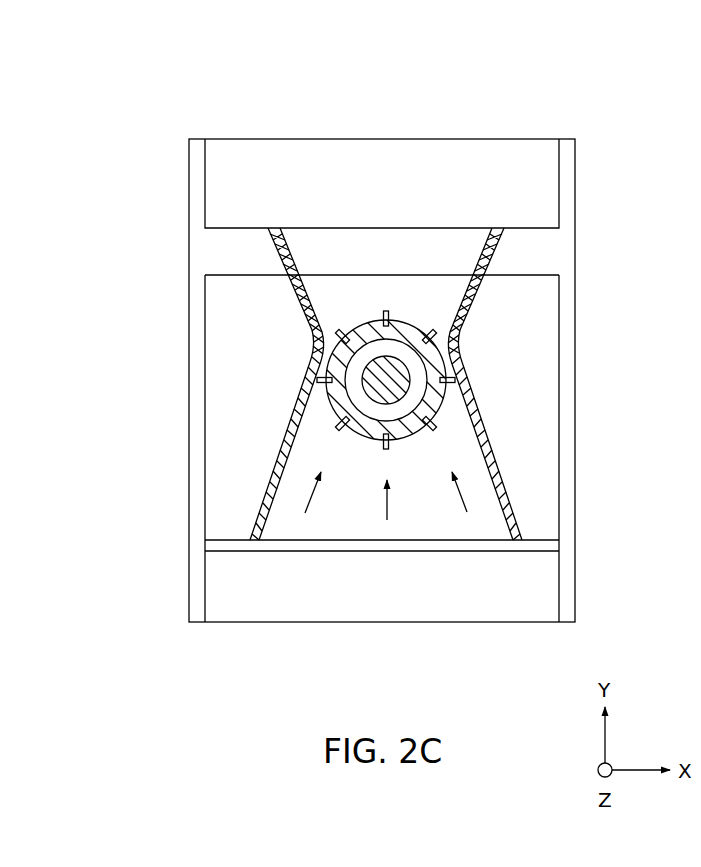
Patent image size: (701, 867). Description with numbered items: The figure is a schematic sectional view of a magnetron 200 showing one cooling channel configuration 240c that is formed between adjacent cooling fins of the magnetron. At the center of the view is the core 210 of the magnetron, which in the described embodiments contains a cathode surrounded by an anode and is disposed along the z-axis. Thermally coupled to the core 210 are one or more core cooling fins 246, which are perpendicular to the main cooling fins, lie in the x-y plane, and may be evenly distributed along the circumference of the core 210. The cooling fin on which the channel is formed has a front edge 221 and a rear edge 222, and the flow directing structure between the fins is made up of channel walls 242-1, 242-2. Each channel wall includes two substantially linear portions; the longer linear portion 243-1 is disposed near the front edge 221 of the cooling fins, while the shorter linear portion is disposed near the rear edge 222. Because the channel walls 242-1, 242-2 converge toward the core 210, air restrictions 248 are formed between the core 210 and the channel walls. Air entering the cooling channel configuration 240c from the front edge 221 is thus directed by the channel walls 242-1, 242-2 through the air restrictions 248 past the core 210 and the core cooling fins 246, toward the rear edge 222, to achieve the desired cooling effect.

The magnetron 200 is at (210, 102).
The rear edge 222 is at (486, 165).
The front edge 221 is at (367, 622).
The channel wall 242-2 is at (266, 243).
The channel wall 242-1 is at (258, 515).
The linear portion 243-1 is at (283, 417).
The core cooling fins 246 is at (386, 312).
The core 210 is at (362, 442).
The air restrictions 248 is at (325, 352).
The cooling channel configuration 240c is at (338, 500).